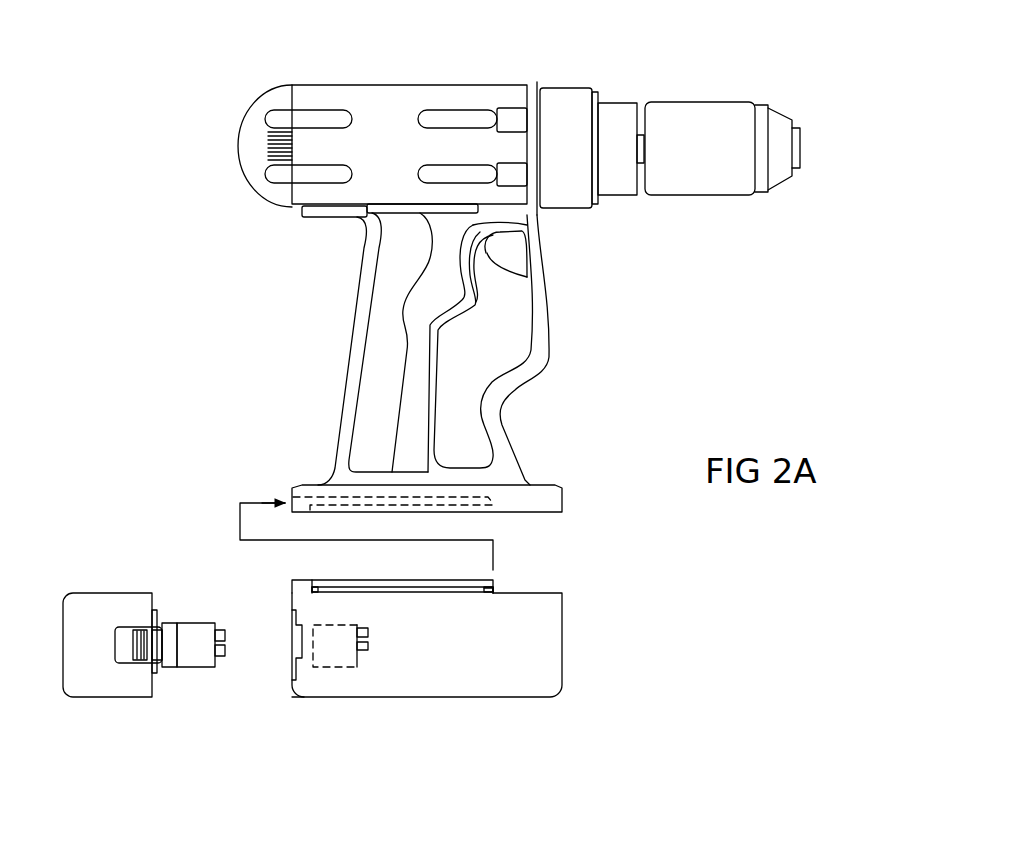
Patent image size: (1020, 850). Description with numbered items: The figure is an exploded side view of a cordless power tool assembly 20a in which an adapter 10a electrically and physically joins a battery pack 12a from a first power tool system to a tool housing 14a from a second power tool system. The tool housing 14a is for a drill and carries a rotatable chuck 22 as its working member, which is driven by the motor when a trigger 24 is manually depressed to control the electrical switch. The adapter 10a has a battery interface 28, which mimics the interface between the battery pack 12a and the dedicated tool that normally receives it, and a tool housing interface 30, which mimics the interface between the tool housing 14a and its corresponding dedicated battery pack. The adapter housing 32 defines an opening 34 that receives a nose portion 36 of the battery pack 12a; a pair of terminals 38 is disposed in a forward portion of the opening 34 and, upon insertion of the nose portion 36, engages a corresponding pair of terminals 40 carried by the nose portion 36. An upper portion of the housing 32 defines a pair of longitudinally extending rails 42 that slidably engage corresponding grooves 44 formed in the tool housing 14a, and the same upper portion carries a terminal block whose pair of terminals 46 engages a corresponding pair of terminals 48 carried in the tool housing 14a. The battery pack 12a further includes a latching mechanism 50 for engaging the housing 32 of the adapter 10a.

The adapter 10a is at (582, 713).
The battery pack 12a is at (107, 592).
The tool housing 14a is at (493, 83).
The power tool assembly 20a is at (173, 95).
The rotatable chuck 22 is at (713, 97).
The trigger 24 is at (490, 260).
The battery interface 28 is at (350, 667).
The tool housing interface 30 is at (497, 578).
The housing 32 is at (563, 608).
The opening 34 is at (323, 623).
The nose portion 36 is at (197, 623).
The terminals 38 is at (370, 632).
The terminals 40 is at (227, 627).
The rails 42 is at (400, 587).
The grooves 44 is at (373, 500).
The terminals 46 is at (493, 595).
The terminals 48 is at (500, 493).
The latching mechanism 50 is at (153, 628).